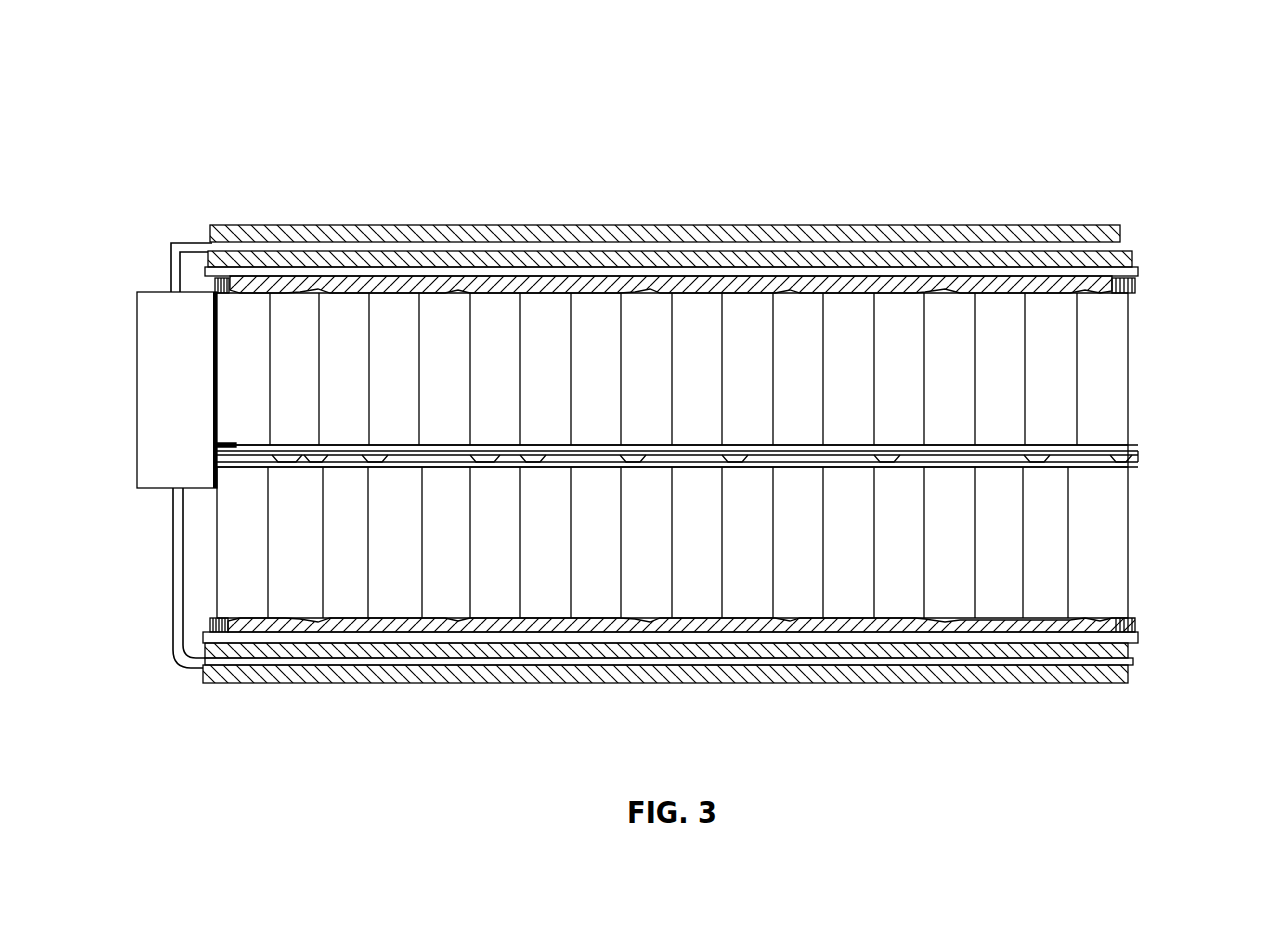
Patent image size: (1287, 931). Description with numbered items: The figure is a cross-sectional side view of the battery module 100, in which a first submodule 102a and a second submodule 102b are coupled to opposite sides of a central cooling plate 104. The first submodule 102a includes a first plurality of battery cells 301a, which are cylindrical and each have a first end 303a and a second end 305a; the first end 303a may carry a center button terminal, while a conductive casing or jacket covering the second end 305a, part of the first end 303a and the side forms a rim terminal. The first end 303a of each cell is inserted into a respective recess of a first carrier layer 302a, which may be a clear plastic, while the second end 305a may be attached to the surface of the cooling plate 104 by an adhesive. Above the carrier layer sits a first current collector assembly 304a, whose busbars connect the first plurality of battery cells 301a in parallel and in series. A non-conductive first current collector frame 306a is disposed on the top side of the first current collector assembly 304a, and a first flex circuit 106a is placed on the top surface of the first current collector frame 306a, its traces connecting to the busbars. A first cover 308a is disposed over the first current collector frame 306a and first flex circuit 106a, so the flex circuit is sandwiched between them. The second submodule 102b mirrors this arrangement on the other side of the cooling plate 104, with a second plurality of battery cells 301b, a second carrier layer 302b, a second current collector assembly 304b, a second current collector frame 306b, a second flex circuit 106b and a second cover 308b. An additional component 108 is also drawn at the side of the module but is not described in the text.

The battery module 100 is at (212, 84).
The first submodule 102a is at (1143, 227).
The second submodule 102b is at (1143, 465).
The cooling plate 104 is at (1140, 455).
The first flex circuit 106a is at (204, 243).
The second flex circuit 106b is at (165, 660).
The control unit 108 is at (178, 390).
The first plurality of battery cells 301a is at (245, 385).
The second plurality of battery cells 301b is at (232, 572).
The first carrier layer 302a is at (215, 285).
The second carrier layer 302b is at (225, 630).
The first end 303a is at (212, 291).
The first current collector assembly 304a is at (205, 270).
The second current collector assembly 304b is at (305, 641).
The second end 305a is at (220, 443).
The first current collector frame 306a is at (286, 262).
The second current collector frame 306b is at (375, 650).
The first cover 308a is at (400, 225).
The second cover 308b is at (420, 680).